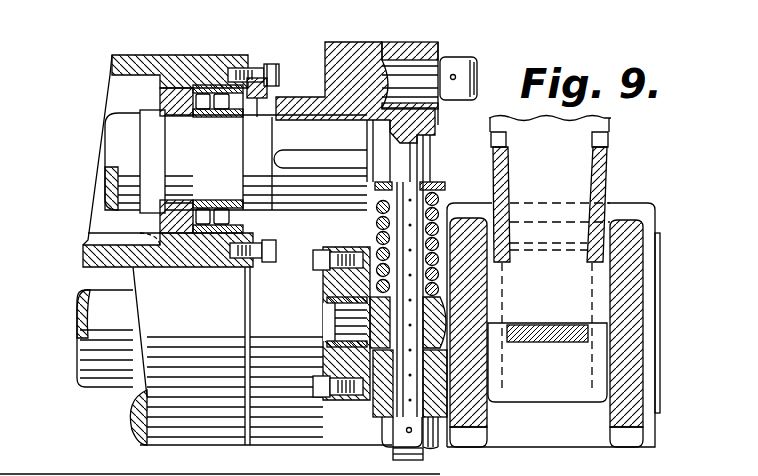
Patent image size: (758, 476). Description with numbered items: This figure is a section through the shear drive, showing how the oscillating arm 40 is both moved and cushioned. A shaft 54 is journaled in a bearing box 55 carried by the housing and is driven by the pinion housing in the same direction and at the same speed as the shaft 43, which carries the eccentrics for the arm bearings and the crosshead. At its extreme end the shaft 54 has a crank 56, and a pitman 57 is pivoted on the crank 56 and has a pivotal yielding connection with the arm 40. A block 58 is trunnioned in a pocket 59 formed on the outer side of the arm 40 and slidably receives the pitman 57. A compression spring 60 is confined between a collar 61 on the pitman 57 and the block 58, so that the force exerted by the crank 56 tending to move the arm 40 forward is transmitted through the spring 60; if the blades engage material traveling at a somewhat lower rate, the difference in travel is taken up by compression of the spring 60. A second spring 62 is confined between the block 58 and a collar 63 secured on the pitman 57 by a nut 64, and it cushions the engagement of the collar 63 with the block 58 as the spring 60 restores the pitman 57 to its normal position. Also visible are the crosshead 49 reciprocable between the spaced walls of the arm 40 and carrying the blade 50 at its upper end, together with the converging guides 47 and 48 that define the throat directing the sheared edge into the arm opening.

The oscillating arm 40 is at (520, 432).
The shaft 43 is at (117, 377).
The converging guide 47 is at (603, 173).
The converging guide 48 is at (580, 123).
The crosshead 49 is at (585, 367).
The blade 50 is at (580, 333).
The shaft 54 is at (120, 137).
The bearing box 55 is at (147, 62).
The crank 56 is at (360, 33).
The pitman 57 is at (425, 145).
The block 58 is at (367, 320).
The pocket 59 is at (353, 397).
The compression spring 60 is at (377, 240).
The collar 61 is at (433, 182).
The second spring 62 is at (433, 367).
The collar 63 is at (427, 447).
The nut 64 is at (403, 440).